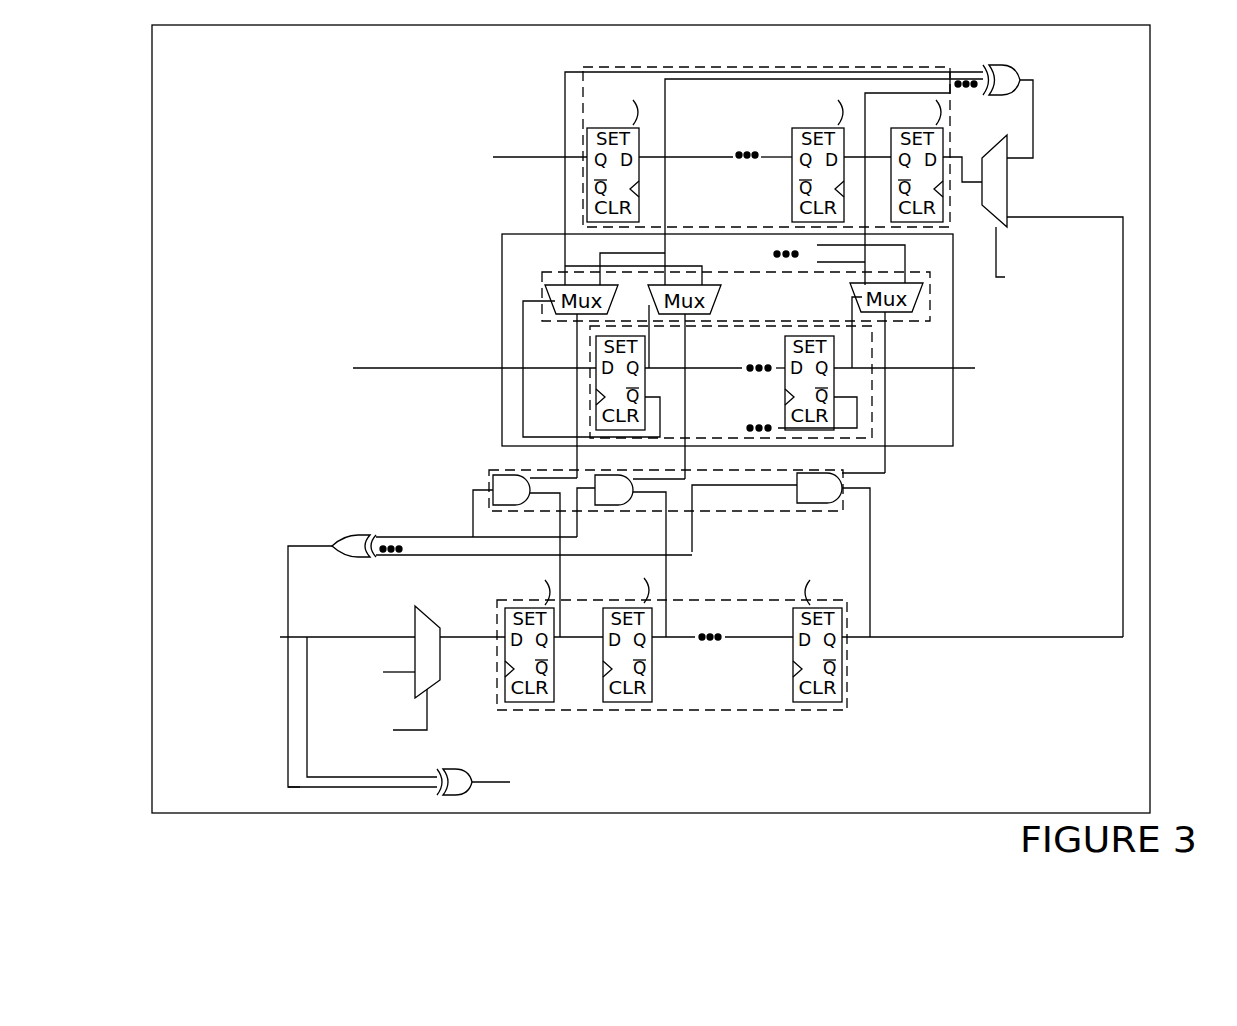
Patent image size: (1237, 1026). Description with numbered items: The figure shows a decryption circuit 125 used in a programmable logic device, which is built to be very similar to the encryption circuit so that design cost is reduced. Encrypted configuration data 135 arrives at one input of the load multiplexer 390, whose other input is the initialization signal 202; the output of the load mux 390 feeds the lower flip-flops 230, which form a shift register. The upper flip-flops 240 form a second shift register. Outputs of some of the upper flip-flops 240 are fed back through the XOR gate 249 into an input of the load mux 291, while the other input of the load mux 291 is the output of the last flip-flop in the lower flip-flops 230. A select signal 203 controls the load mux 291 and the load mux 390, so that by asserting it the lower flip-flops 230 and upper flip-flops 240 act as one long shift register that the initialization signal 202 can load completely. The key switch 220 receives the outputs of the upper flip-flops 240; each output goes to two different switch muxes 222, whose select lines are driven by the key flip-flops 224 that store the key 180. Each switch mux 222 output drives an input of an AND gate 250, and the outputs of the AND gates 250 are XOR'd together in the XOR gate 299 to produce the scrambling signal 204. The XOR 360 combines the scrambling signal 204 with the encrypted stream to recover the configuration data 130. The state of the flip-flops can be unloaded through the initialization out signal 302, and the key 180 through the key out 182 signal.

The encryption circuit 125 is at (651, 419).
The upper flip-flops 240 is at (582, 131).
The initialization out signal 302 is at (461, 142).
The XOR gate 249 is at (994, 111).
The load mux 291 is at (1010, 178).
The select signal 203 is at (706, 487).
The key switch 220 is at (500, 233).
The switch muxes 222 is at (541, 284).
The key flip-flops 224 is at (594, 396).
The key 180 is at (453, 366).
The key out signal 182 is at (929, 381).
The AND gates 250 is at (846, 499).
The XOR gate 299 is at (490, 646).
The load multiplexer 390 is at (413, 607).
The encrypted configuration data 135 is at (297, 687).
The initialization signal 202 is at (362, 663).
The lower flip-flops 230 is at (850, 605).
The XOR gate 360 is at (455, 793).
The configuration data 130 is at (548, 778).
The signal X204 204 is at (311, 798).